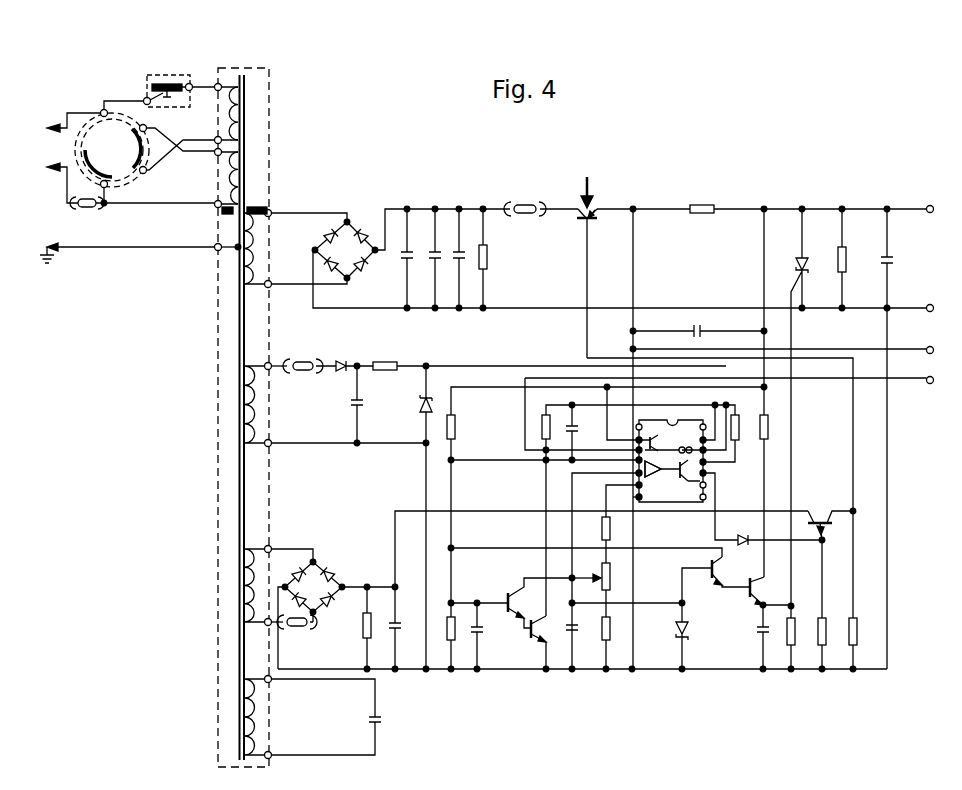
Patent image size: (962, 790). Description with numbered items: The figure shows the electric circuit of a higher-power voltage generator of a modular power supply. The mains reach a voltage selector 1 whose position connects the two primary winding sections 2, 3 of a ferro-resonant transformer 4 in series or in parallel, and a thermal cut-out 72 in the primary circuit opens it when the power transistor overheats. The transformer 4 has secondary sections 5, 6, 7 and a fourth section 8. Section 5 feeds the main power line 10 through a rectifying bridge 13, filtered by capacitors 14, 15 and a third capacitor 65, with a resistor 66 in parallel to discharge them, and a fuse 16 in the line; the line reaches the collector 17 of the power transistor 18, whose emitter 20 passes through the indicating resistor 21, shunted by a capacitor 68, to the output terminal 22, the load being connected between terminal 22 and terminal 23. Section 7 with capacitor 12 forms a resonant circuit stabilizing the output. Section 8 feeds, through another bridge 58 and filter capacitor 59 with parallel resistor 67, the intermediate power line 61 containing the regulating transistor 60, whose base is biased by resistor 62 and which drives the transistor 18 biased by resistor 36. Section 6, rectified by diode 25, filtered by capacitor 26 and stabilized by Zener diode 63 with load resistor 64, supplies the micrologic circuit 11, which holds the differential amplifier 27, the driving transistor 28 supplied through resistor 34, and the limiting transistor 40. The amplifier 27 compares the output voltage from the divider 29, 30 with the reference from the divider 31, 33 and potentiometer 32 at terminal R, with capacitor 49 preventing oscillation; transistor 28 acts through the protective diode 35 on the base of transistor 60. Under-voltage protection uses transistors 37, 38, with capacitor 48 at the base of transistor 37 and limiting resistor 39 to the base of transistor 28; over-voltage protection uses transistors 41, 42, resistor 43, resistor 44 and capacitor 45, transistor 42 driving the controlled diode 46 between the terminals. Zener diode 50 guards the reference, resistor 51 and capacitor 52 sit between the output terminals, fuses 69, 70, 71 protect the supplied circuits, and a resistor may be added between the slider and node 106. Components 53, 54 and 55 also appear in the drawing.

The voltage selector 1 is at (99, 108).
The winding section 2 is at (226, 102).
The winding section 3 is at (228, 238).
The transformer 4 is at (270, 132).
The secondary-winding section 5 is at (258, 364).
The secondary-winding section 6 is at (258, 207).
The secondary-winding section 7 is at (258, 680).
The fourth secondary section 8 is at (258, 548).
The power line 10 is at (387, 206).
The micrologic circuit 11 is at (686, 504).
The capacitor 12 is at (379, 716).
The rectifying bridge 13 is at (320, 250).
The capacitor 14 is at (404, 259).
The capacitor 15 is at (434, 260).
The fuse 16 is at (523, 204).
The collector 17 is at (575, 212).
The power transistor 18 is at (587, 181).
The emitter 20 is at (594, 211).
The indicating resistor 21 is at (702, 204).
The output terminal 22 is at (928, 206).
The terminal 23 is at (928, 305).
The diode 25 is at (341, 361).
The capacitor 26 is at (352, 406).
The differential amplifier 27 is at (656, 481).
The transistor 28 is at (685, 477).
The resistive divider 29 is at (457, 429).
The resistive divider 30 is at (447, 624).
The second resistive divider 31 is at (603, 527).
The potentiometer 32 is at (601, 572).
The second resistive divider 33 is at (611, 630).
The resistor 34 is at (737, 448).
The diode 35 is at (744, 535).
The resistor 36 is at (864, 643).
The transistor 37 is at (512, 603).
The transistor 38 is at (536, 635).
The limiting resistor 39 is at (542, 428).
The limiting transistor 40 is at (654, 437).
The transistor 41 is at (716, 563).
The transistor 42 is at (755, 585).
The limiting resistor 43 is at (765, 440).
The resistor 44 is at (796, 637).
The capacitor 45 is at (758, 630).
The controlled diode 46 is at (798, 262).
The capacitor 48 is at (480, 636).
The capacitor 49 is at (575, 431).
The Zener diode 50 is at (687, 638).
The resistor 51 is at (846, 266).
The capacitor 52 is at (890, 257).
The capacitor 53 is at (575, 635).
The terminal 54 is at (928, 349).
The terminal 55 is at (928, 382).
The rectifying bridge 58 is at (322, 567).
The filter capacitor 59 is at (398, 633).
The regulating transistor 60 is at (818, 520).
The intermediate power line 61 is at (394, 522).
The resistor 62 is at (826, 604).
The Zener diode 63 is at (422, 410).
The load resistor 64 is at (388, 361).
The third capacitor 65 is at (457, 260).
The resistor 66 is at (488, 256).
The resistor 67 is at (363, 636).
The capacitor 68 is at (702, 334).
The fuse 69 is at (300, 359).
The fuse 70 is at (298, 628).
The fuse 71 is at (90, 209).
The thermal cut-out 72 is at (146, 86).
The node 106 is at (566, 576).